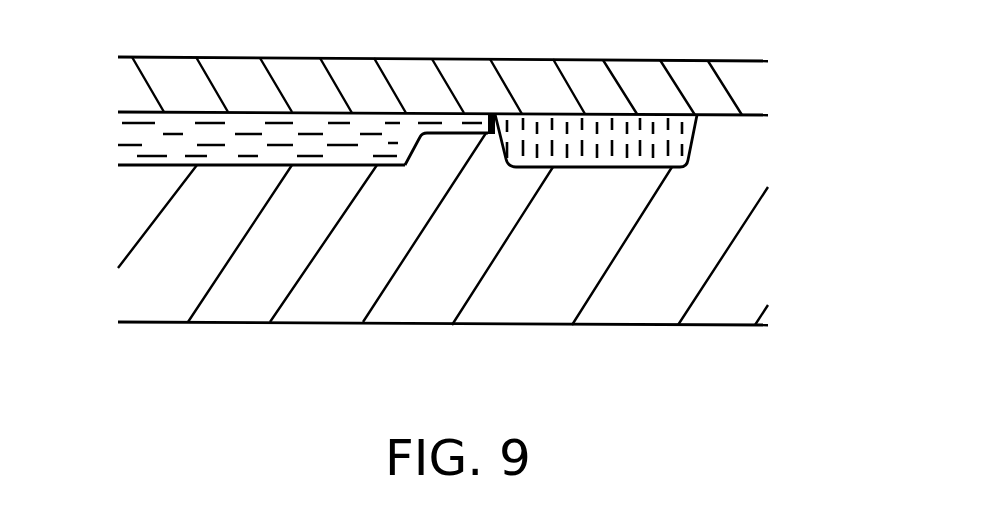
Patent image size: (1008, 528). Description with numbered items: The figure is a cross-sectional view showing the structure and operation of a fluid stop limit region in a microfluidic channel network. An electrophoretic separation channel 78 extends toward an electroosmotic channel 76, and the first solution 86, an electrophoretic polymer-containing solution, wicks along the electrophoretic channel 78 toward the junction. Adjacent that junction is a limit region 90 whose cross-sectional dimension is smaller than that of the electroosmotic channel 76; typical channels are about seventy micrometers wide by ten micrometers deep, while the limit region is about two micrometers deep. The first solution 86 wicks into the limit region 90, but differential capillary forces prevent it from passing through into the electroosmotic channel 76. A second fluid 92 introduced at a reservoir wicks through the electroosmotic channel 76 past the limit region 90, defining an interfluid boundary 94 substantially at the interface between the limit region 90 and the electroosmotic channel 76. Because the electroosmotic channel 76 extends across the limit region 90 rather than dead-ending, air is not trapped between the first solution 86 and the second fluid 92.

The electroosmotic channel 76 is at (628, 168).
The electrophoretic separation channel 78 is at (252, 166).
The first solution 86 is at (130, 137).
The limit region 90 is at (448, 134).
The second fluid 92 is at (618, 127).
The interfluid boundary 94 is at (489, 113).